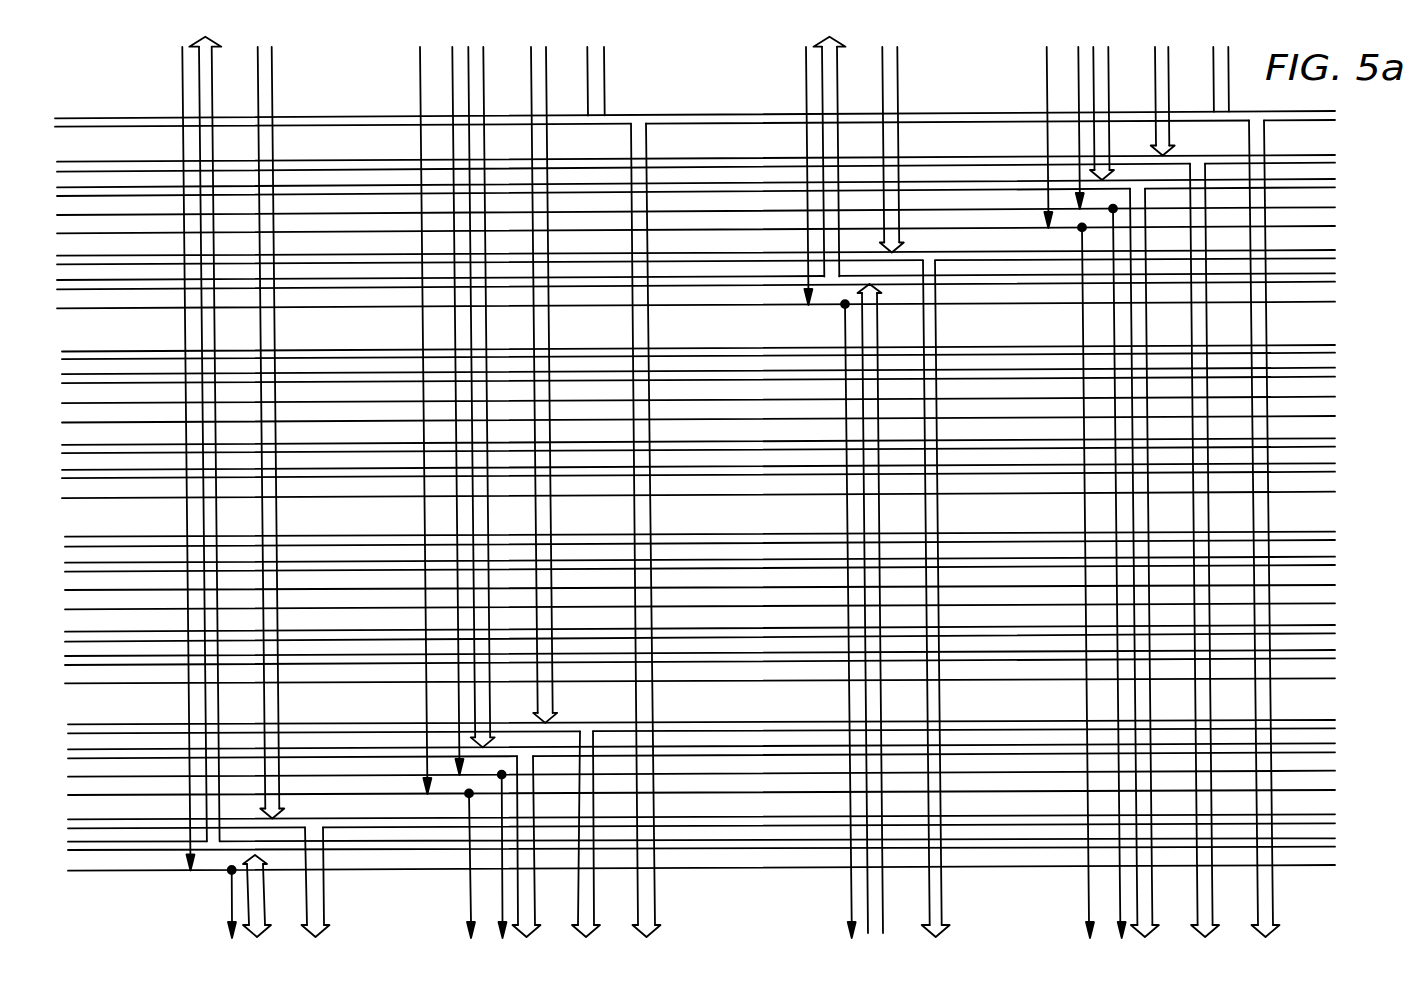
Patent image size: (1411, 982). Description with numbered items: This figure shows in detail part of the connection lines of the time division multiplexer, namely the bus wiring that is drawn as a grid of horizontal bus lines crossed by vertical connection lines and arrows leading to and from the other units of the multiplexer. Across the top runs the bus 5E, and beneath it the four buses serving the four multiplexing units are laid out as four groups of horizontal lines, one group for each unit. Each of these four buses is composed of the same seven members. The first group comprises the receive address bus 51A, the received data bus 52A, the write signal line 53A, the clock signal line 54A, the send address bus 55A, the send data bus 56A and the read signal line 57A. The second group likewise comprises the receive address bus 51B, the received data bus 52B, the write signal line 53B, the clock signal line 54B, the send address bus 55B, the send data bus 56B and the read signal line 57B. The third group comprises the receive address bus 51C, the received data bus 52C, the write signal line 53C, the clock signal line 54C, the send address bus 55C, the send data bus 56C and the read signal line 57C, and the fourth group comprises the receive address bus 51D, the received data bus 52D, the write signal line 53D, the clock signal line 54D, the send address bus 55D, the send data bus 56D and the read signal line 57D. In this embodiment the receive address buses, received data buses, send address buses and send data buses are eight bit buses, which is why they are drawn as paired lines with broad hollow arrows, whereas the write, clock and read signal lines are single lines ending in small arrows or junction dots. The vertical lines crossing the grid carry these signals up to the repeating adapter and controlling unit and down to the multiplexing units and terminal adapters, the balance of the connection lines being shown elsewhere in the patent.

The bus 5E is at (707, 492).
The receive address bus 51A is at (714, 492).
The received data bus 52A is at (714, 492).
The write signal line 53A is at (714, 492).
The clock signal line 54A is at (714, 492).
The send address bus 55A is at (714, 492).
The send data bus 56A is at (714, 485).
The read signal line 57A is at (714, 492).
The receive address bus 51B is at (717, 347).
The received data bus 52B is at (717, 372).
The write signal line 53B is at (717, 396).
The clock signal line 54B is at (717, 417).
The send address bus 55B is at (717, 443).
The send data bus 56B is at (717, 467).
The read signal line 57B is at (717, 492).
The receive address bus 51C is at (718, 537).
The received data bus 52C is at (718, 562).
The write signal line 53C is at (718, 587).
The clock signal line 54C is at (718, 605).
The send address bus 55C is at (718, 630).
The send data bus 56C is at (718, 655).
The read signal line 57C is at (718, 678).
The receive address bus 51D is at (720, 492).
The received data bus 52D is at (720, 492).
The write signal line 53D is at (720, 492).
The clock signal line 54D is at (720, 492).
The send address bus 55D is at (720, 492).
The send data bus 56D is at (720, 487).
The read signal line 57D is at (720, 492).